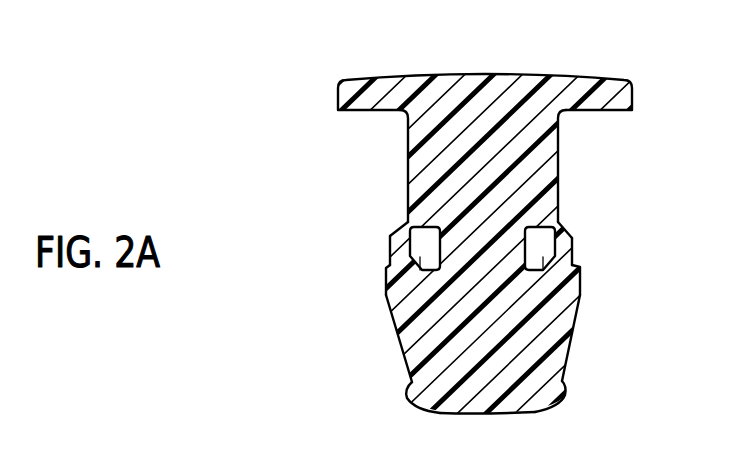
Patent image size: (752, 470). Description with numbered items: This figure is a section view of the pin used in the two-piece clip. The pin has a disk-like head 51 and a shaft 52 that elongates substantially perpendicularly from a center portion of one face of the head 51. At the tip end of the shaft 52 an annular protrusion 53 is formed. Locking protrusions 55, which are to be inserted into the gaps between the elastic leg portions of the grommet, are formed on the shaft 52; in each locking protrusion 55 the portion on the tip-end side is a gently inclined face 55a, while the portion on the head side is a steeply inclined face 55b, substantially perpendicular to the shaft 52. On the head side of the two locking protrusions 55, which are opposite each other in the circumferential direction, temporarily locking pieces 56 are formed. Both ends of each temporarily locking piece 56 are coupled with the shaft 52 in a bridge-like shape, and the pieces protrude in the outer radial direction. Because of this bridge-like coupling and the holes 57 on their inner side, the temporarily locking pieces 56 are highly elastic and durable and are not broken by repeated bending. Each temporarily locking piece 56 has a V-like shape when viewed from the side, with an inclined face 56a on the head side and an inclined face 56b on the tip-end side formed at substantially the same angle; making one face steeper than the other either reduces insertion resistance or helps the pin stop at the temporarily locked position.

The head 51 is at (581, 92).
The shaft 52 is at (428, 135).
The annular protrusion 53 is at (560, 397).
The locking protrusion 55 is at (391, 291).
The gently inclined face 55a is at (400, 356).
The steeply inclined face 55b is at (397, 270).
The temporarily locking piece 56 is at (390, 246).
The inclined face 56a is at (399, 229).
The inclined face 56b is at (392, 262).
The hole 57 is at (420, 260).